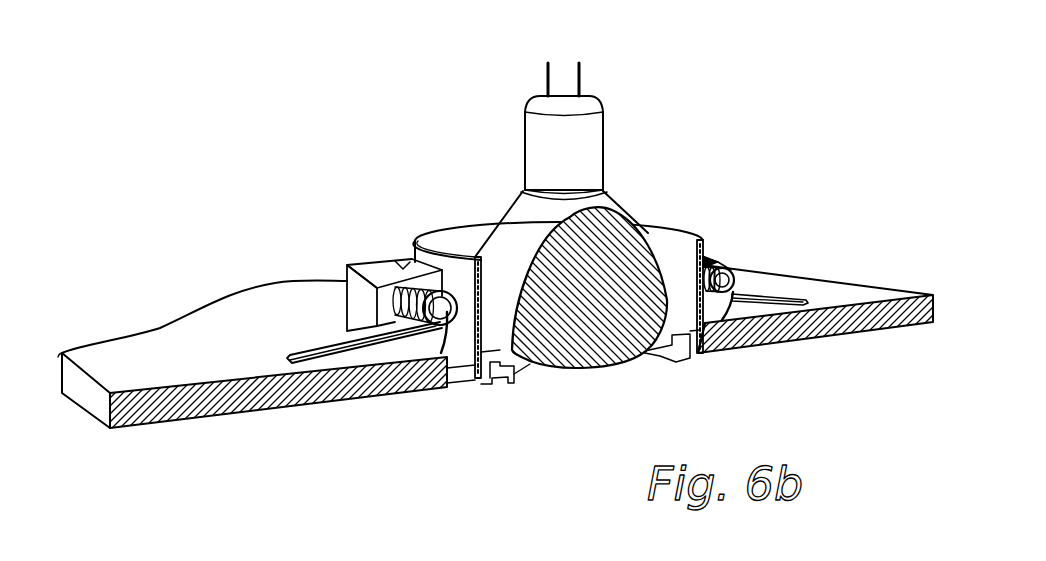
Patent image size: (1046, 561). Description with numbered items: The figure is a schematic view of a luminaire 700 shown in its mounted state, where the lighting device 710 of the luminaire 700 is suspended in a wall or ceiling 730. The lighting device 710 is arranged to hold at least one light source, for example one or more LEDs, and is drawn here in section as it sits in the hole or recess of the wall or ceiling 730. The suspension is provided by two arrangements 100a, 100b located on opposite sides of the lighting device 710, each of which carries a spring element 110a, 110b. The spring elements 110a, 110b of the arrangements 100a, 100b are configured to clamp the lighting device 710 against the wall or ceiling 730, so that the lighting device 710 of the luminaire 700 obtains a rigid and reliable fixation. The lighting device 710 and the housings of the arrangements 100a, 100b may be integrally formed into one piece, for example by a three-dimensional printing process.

The luminaire 700 is at (549, 205).
The lighting device 710 is at (620, 210).
The wall or ceiling 730 is at (836, 333).
The arrangement 100a is at (347, 257).
The arrangement 100b is at (782, 229).
The spring element 110a is at (322, 333).
The spring element 110b is at (773, 283).